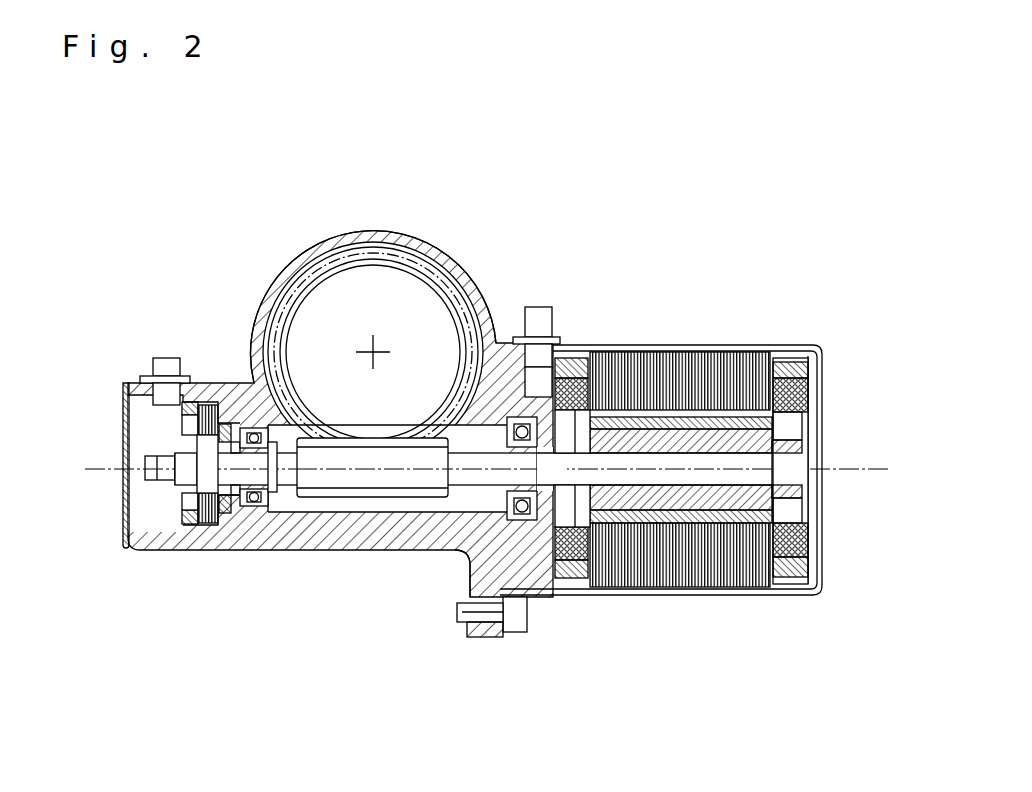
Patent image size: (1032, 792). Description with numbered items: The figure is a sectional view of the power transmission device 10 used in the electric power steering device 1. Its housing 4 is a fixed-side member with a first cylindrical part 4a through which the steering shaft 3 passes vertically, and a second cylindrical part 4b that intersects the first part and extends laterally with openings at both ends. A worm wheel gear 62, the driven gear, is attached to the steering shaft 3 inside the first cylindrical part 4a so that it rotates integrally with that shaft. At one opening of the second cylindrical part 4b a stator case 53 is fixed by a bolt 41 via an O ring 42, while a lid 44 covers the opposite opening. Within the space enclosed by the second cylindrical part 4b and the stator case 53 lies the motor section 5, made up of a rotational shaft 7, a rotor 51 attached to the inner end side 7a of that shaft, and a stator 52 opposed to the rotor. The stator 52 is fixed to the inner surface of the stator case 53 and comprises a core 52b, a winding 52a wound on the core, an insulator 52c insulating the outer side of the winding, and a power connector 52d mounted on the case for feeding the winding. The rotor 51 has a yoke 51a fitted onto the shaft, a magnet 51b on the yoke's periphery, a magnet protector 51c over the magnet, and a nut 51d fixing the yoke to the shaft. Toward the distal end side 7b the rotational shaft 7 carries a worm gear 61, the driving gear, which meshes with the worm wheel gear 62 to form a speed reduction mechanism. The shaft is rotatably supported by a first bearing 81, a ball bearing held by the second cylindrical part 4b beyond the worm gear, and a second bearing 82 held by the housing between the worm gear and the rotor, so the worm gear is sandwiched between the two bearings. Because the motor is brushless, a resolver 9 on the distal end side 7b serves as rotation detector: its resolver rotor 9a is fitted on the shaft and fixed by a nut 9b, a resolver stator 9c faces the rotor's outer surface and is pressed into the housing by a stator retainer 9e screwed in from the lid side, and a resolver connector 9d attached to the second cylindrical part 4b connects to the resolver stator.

The electric power steering device 1 is at (216, 166).
The power transmission device 10 is at (789, 232).
The steering shaft 3 is at (415, 316).
The housing 4 is at (372, 231).
The first cylindrical part 4a is at (298, 247).
The second cylindrical part 4b is at (273, 550).
The motor section 5 is at (717, 316).
The rotational shaft 7 is at (470, 482).
The inner end side 7a is at (745, 475).
The distal end side 7b is at (128, 470).
The resolver 9 is at (160, 492).
The resolver rotor 9a is at (224, 423).
The nut 9b is at (181, 445).
The resolver stator 9c is at (210, 402).
The resolver connector 9d is at (161, 368).
The stator retainer 9e is at (182, 519).
The bolt 41 is at (513, 622).
The O ring 42 is at (465, 597).
The lid 44 is at (124, 449).
The rotor 51 is at (657, 433).
The yoke 51a is at (770, 446).
The magnet 51b is at (734, 440).
The magnet protector 51c is at (738, 418).
The nut 51d is at (790, 445).
The stator 52 is at (690, 595).
The winding 52a is at (805, 548).
The core 52b is at (732, 595).
The insulator 52c is at (807, 597).
The power connector 52d is at (541, 318).
The stator case 53 is at (630, 595).
The worm gear 61 is at (352, 488).
The worm wheel gear 62 is at (424, 245).
The first bearing 81 is at (232, 507).
The second bearing 82 is at (540, 593).